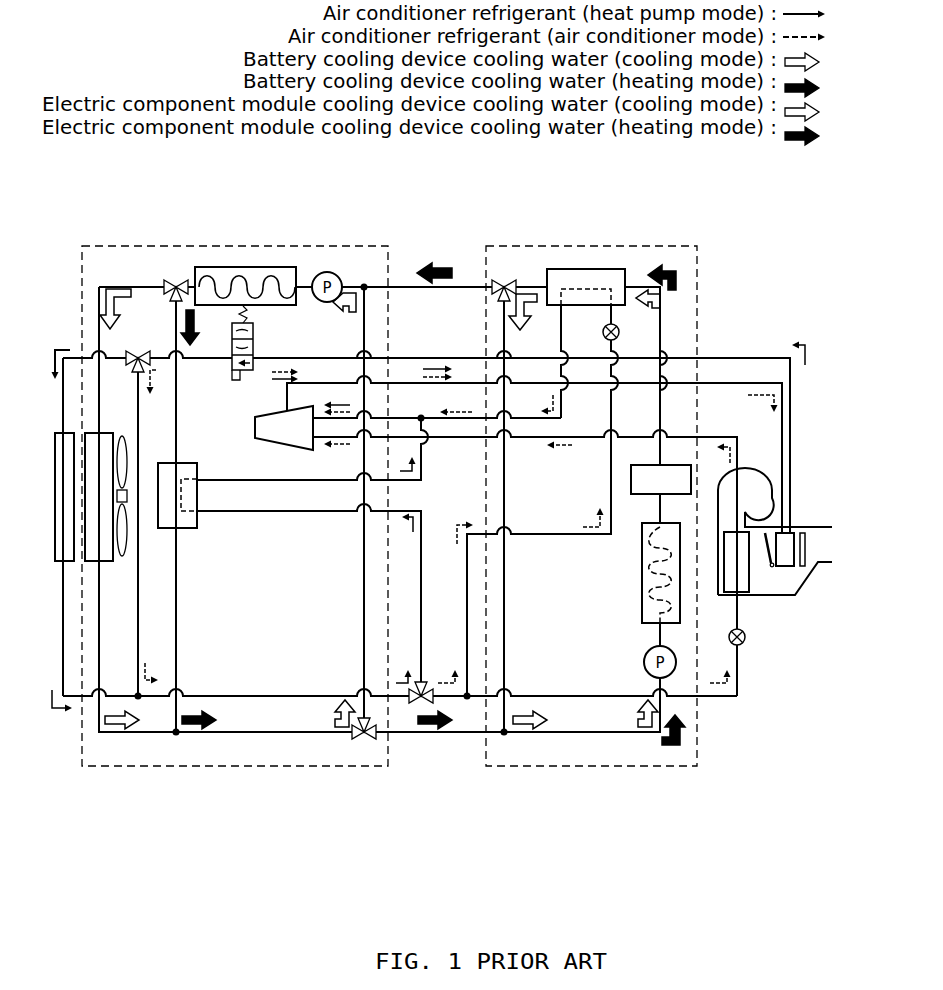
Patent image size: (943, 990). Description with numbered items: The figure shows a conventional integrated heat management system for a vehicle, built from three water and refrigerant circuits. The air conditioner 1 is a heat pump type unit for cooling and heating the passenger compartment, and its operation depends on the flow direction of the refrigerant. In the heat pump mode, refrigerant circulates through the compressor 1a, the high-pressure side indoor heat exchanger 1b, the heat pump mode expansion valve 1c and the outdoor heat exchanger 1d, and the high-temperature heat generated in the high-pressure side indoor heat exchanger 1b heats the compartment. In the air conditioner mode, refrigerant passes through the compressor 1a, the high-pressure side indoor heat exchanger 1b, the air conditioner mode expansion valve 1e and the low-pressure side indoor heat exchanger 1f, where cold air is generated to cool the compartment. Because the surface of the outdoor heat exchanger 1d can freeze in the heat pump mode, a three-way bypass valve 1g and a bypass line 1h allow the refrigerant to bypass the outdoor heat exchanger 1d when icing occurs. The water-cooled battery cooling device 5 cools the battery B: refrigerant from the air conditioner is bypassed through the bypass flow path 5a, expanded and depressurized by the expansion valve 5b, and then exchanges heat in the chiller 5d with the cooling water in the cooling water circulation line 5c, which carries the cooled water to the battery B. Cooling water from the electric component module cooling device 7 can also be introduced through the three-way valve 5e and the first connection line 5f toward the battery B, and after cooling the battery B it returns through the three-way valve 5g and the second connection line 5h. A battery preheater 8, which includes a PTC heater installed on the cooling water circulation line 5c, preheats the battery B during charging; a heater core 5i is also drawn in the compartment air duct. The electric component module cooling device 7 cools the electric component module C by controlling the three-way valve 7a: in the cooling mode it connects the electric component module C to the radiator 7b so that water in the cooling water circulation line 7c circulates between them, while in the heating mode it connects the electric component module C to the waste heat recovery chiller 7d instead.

The air conditioner 1 is at (775, 342).
The compressor 1a is at (255, 425).
The high-pressure side indoor heat exchanger 1b is at (790, 540).
The heat pump mode expansion valve 1c is at (253, 333).
The outdoor heat exchanger 1d is at (56, 545).
The air conditioner mode expansion valve 1e is at (745, 639).
The low-pressure side indoor heat exchanger 1f is at (745, 585).
The three-way bypass valve 1g is at (132, 350).
The bypass line 1h is at (135, 405).
The battery cooling device 5 is at (700, 268).
The bypass flow path 5a is at (469, 612).
The expansion valve 5b is at (622, 332).
The cooling water circulation line 5c is at (668, 344).
The chiller 5d is at (590, 268).
The three-way valve 5e is at (364, 745).
The first connection line 5f is at (458, 738).
The three-way valve 5g is at (500, 280).
The second connection line 5h is at (410, 282).
The heater core 5i is at (806, 545).
The electric component module cooling device 7 is at (222, 246).
The three-way valve 7a is at (172, 278).
The radiator 7b is at (88, 436).
The cooling water circulation line 7c is at (132, 280).
The waste heat recovery chiller 7d is at (185, 530).
The battery preheater 8 is at (672, 465).
The battery B is at (642, 592).
The electric component module C is at (272, 268).